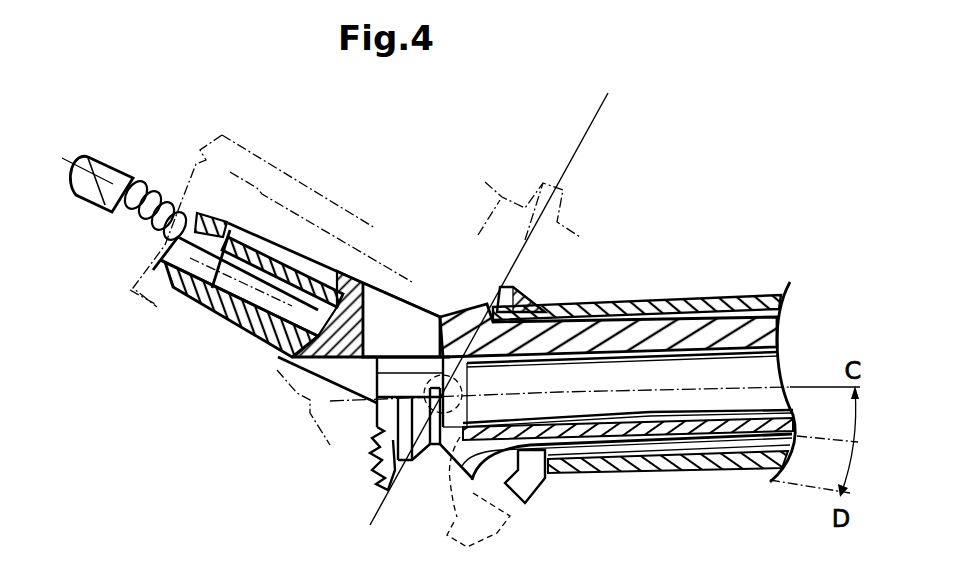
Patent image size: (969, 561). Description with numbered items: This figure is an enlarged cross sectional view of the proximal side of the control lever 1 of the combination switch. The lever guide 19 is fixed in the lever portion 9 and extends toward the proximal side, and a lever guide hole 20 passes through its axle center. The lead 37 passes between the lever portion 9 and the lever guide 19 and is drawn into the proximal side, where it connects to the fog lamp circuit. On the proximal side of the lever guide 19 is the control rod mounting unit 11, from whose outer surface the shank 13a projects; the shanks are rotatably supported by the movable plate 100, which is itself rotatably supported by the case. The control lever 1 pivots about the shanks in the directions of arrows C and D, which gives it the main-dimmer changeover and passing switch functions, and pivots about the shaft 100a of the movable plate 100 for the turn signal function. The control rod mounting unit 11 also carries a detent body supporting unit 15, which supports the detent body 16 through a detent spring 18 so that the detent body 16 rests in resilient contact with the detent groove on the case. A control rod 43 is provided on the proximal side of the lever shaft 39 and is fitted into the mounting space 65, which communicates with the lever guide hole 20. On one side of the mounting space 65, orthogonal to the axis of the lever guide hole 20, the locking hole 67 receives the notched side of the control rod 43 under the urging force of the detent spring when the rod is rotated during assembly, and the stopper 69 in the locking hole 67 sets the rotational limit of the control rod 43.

The control lever 1 is at (618, 296).
The lever portion 9 is at (755, 297).
The control rod mounting unit 11 is at (421, 355).
The shank 13a is at (397, 490).
The detent body supporting unit 15 is at (305, 263).
The detent body 16 is at (122, 171).
The detent spring 18 is at (167, 190).
The lever guide 19 is at (572, 330).
The lever guide hole 20 is at (664, 356).
The lead 37 is at (722, 443).
The lever shaft 39 is at (707, 367).
The control rod 43 is at (372, 475).
The mounting space 65 is at (342, 380).
The locking hole 67 is at (403, 333).
The stopper 69 is at (447, 312).
The movable plate 100 is at (492, 190).
The shaft 100a is at (563, 190).